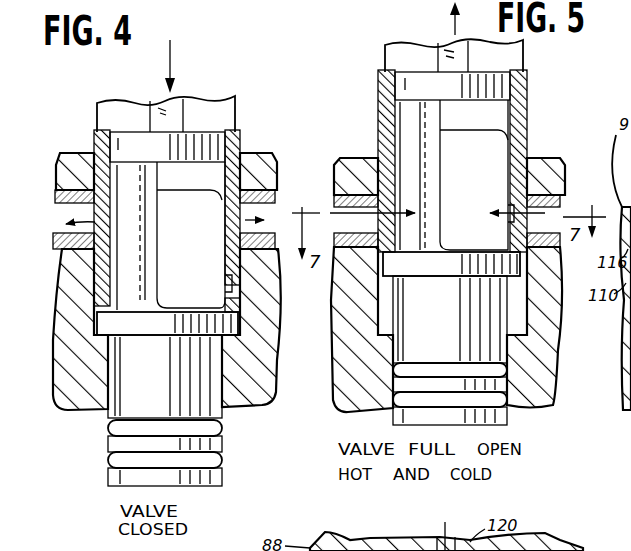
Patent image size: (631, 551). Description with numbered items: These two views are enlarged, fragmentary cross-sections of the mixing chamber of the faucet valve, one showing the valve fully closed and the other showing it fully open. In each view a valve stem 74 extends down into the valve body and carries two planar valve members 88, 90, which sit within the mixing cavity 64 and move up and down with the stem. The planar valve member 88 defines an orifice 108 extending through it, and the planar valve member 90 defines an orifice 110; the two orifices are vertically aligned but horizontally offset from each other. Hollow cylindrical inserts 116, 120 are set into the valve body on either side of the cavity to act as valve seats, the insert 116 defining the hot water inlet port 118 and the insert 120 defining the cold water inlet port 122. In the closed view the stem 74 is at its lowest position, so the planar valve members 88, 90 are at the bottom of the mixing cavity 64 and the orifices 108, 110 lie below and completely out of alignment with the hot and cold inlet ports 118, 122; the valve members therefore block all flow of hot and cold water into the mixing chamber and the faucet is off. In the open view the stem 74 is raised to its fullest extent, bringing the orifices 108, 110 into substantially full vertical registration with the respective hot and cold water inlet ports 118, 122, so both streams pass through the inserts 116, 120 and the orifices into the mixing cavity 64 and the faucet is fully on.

In FIG. 4, the valve stem 74 is at (241, 110).
In FIG. 5, the valve stem 74 is at (529, 60).
In FIG. 4, the planar valve member 88 is at (240, 153).
In FIG. 5, the planar valve member 88 is at (523, 115).
In FIG. 4, the planar valve member 90 is at (94, 150).
In FIG. 5, the planar valve member 90 is at (378, 128).
In FIG. 4, the orifice 108 is at (232, 284).
In FIG. 5, the orifice 108 is at (508, 216).
In FIG. 4, the orifice 110 is at (133, 282).
In FIG. 5, the orifice 110 is at (392, 240).
In FIG. 4, the hollow cylindrical insert 116 is at (62, 240).
In FIG. 5, the hollow cylindrical insert 116 is at (372, 243).
In FIG. 4, the hot water inlet port 118 is at (75, 200).
In FIG. 5, the hot water inlet port 118 is at (380, 258).
In FIG. 4, the hollow cylindrical insert 120 is at (276, 232).
In FIG. 5, the hollow cylindrical insert 120 is at (565, 212).
In FIG. 4, the cold water inlet port 122 is at (272, 212).
In FIG. 5, the cold water inlet port 122 is at (540, 262).
In FIG. 4, the mixing cavity 64 is at (238, 292).